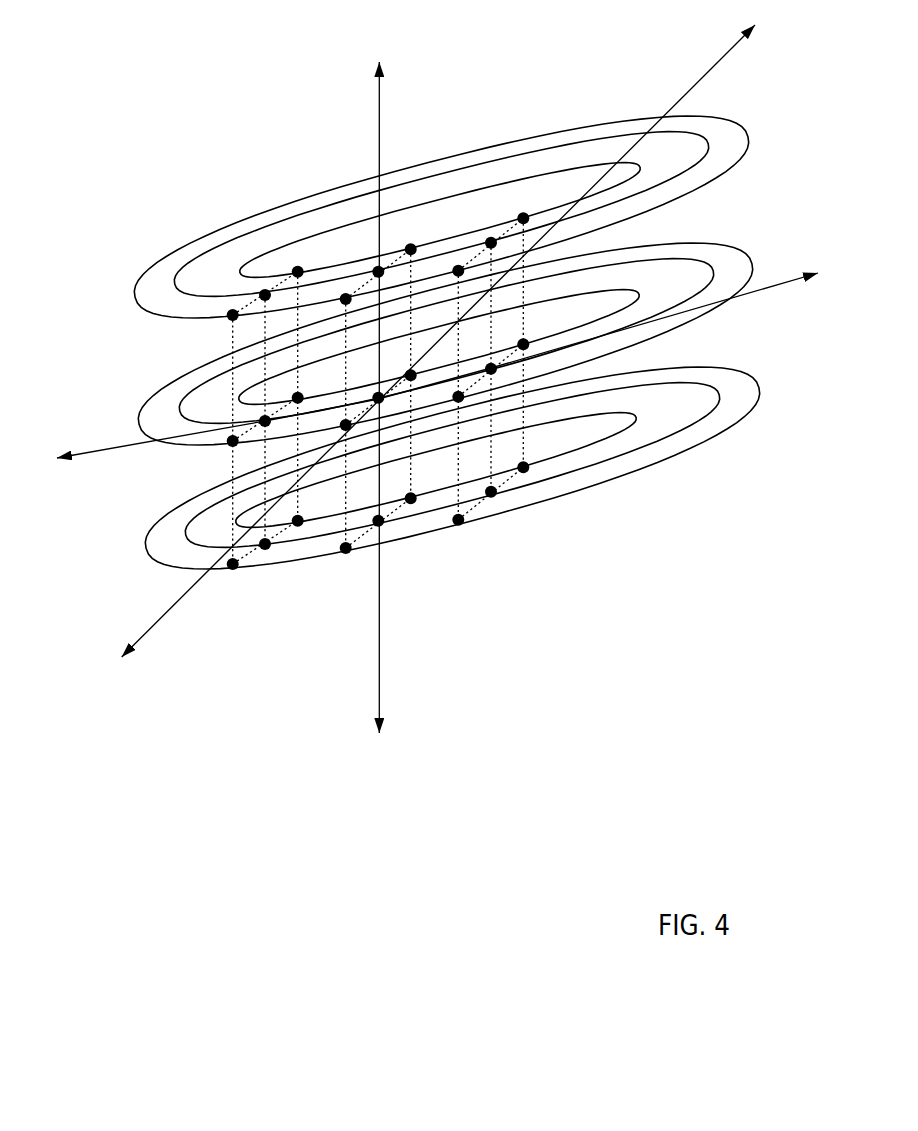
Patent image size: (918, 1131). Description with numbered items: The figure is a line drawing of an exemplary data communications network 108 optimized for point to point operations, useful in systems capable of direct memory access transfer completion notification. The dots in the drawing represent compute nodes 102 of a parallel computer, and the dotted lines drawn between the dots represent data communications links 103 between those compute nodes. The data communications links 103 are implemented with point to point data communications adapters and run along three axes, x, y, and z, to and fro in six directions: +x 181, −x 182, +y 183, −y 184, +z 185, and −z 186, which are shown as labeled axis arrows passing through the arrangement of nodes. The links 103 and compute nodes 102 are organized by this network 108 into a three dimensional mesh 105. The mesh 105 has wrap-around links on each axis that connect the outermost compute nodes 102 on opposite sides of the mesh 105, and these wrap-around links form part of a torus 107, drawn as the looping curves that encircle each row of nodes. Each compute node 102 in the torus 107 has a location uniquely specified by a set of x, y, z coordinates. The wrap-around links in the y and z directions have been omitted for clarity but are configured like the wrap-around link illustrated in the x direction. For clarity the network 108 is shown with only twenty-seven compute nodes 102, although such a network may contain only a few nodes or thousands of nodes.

The compute nodes 102 is at (459, 522).
The data communications links 103 is at (232, 344).
The three dimensional mesh 105 is at (523, 218).
The torus 107 is at (222, 228).
The data communications network 108 is at (285, 792).
The +x direction 181 is at (855, 302).
The −x direction 182 is at (57, 496).
The +y direction 183 is at (798, 53).
The −y direction 184 is at (118, 706).
The +z direction 185 is at (397, 52).
The −z direction 186 is at (398, 794).